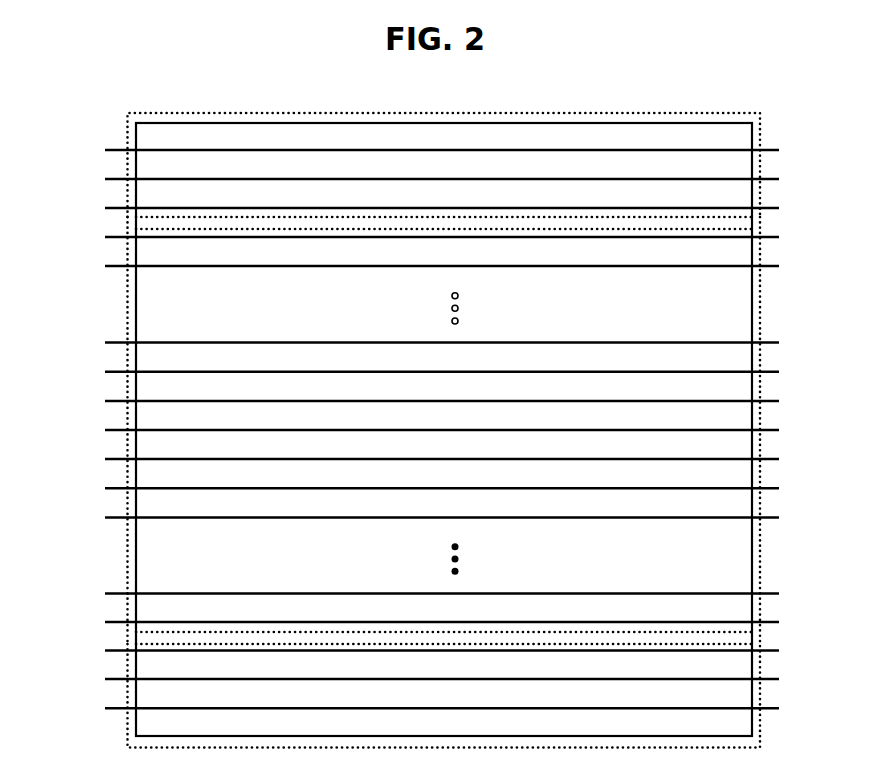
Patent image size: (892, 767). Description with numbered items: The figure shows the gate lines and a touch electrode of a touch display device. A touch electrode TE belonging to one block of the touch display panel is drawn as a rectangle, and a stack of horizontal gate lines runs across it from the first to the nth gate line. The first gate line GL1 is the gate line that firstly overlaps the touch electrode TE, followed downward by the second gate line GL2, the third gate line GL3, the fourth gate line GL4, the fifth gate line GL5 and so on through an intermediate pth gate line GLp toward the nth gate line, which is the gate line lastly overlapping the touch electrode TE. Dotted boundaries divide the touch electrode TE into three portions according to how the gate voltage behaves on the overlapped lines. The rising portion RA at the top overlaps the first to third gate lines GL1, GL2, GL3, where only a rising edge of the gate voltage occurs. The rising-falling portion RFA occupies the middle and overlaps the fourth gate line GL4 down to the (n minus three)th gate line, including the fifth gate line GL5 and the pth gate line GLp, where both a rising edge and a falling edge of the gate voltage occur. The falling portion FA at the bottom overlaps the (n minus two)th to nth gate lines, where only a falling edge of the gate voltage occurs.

The first gate line GL1 is at (410, 151).
The second gate line GL2 is at (410, 180).
The third gate line GL3 is at (410, 209).
The fourth gate line GL4 is at (410, 238).
The fifth gate line GL5 is at (410, 267).
The pth gate line GLp is at (410, 433).
The rising portion RA is at (760, 168).
The touch electrode TE is at (752, 319).
The rising-falling portion RFA is at (760, 547).
The falling portion FA is at (760, 698).